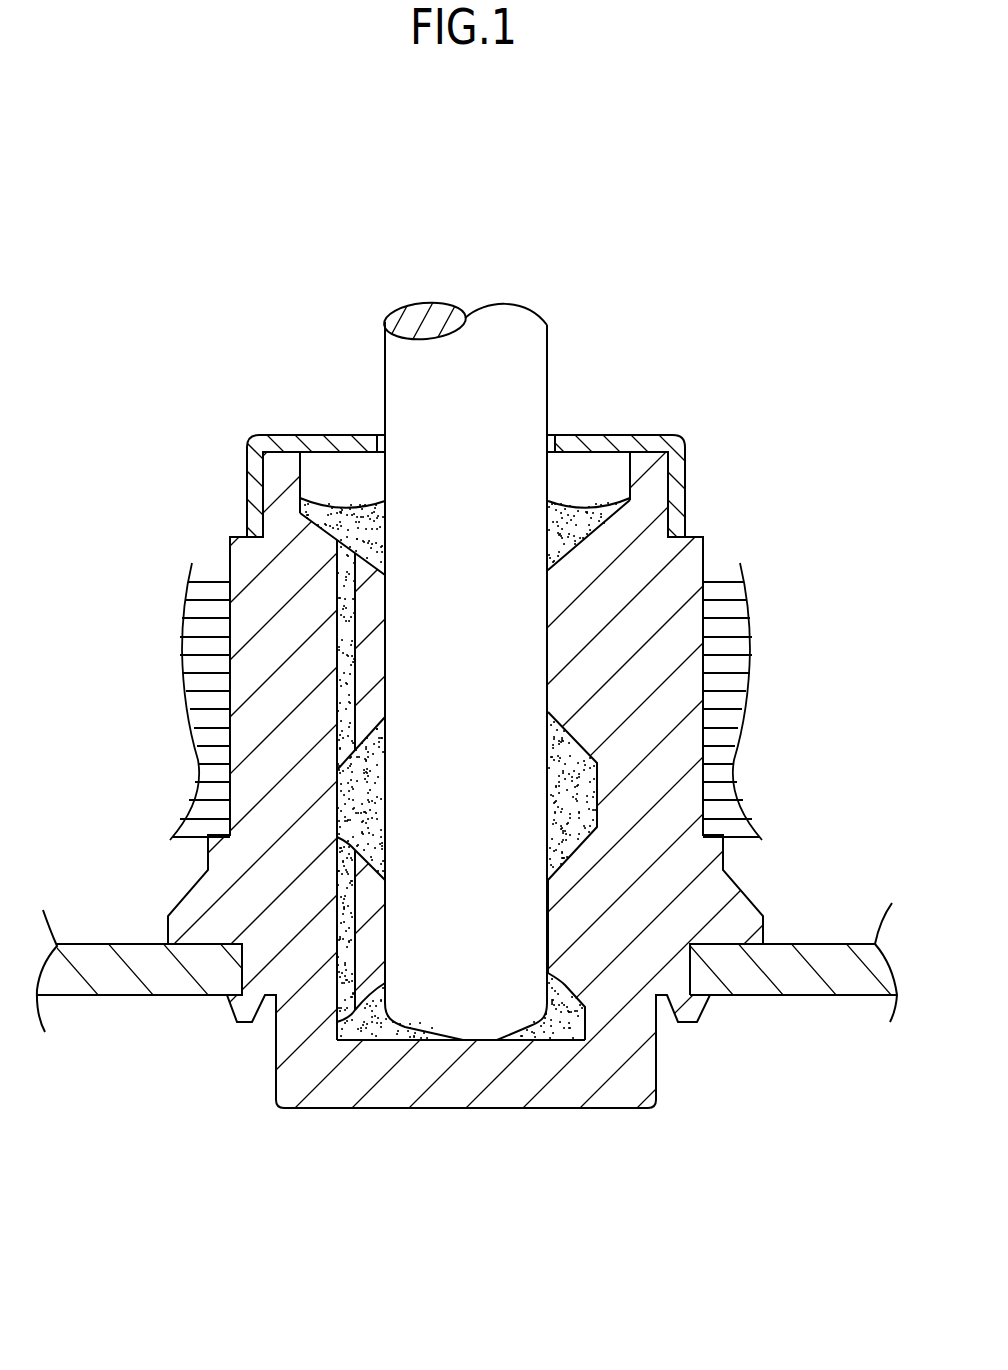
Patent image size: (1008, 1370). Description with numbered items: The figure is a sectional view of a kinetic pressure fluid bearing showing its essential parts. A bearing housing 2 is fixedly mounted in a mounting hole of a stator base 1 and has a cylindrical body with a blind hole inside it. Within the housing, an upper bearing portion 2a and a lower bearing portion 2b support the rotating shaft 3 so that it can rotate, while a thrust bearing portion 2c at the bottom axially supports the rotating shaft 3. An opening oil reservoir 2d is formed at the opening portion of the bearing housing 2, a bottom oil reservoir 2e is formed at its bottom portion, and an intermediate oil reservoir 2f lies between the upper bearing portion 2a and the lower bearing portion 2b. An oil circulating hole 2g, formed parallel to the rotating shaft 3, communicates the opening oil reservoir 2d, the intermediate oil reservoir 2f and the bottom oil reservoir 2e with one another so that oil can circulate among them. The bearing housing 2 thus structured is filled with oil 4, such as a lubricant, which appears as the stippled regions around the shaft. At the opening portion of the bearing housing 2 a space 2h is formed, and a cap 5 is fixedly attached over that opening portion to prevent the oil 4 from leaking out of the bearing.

The stator base 1 is at (810, 985).
The bearing housing 2 is at (246, 1059).
The upper bearing portion 2a is at (547, 633).
The lower bearing portion 2b is at (548, 928).
The thrust bearing portion 2c is at (462, 1043).
The opening oil reservoir 2d is at (600, 507).
The bottom oil reservoir 2e is at (572, 1030).
The intermediate oil reservoir 2f is at (577, 795).
The oil circulating hole 2g is at (343, 593).
The space 2h is at (335, 468).
The rotating shaft 3 is at (402, 388).
The oil 4 is at (568, 502).
The cap 5 is at (683, 450).